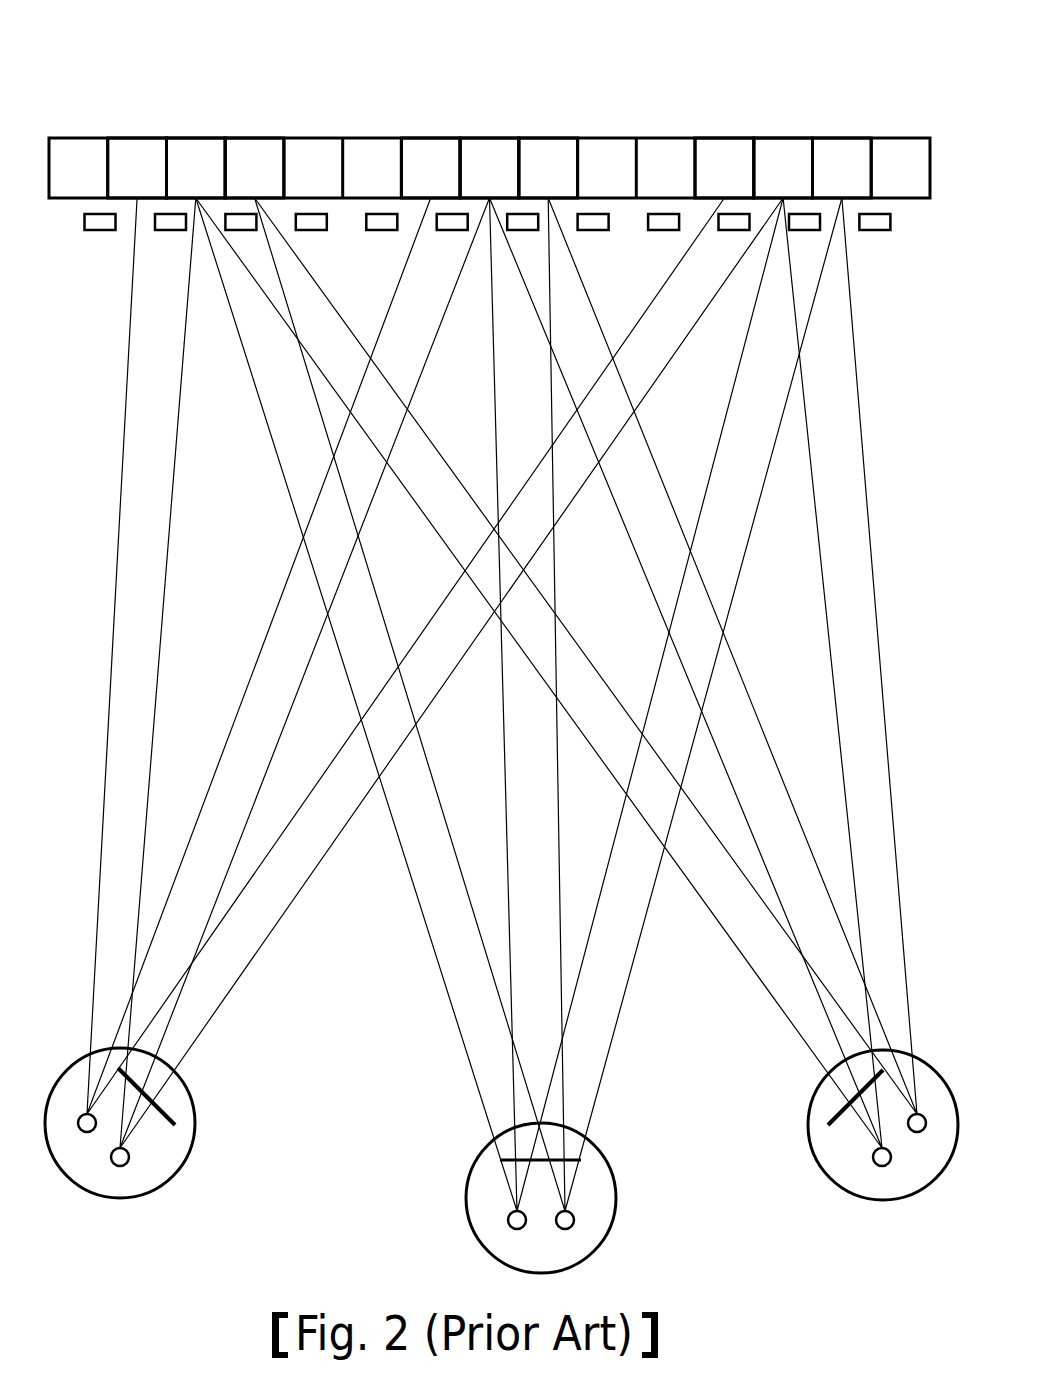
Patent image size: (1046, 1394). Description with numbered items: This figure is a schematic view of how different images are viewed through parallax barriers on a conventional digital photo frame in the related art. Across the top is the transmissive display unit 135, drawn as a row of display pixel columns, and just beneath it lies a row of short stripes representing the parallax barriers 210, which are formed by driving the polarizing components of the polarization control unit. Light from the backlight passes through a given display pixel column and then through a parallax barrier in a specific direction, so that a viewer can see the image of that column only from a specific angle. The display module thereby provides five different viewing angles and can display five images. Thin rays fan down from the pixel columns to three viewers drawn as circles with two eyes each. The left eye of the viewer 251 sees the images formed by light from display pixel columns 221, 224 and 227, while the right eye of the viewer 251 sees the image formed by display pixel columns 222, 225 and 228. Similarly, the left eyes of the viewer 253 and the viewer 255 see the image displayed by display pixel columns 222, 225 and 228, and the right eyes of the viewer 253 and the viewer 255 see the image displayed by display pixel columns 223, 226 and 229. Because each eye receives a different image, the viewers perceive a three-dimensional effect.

The transmissive display unit 135 is at (589, 86).
The parallax barriers 210 is at (100, 230).
The display pixel column 221 is at (137, 137).
The display pixel column 222 is at (196, 137).
The display pixel column 223 is at (255, 137).
The display pixel column 224 is at (431, 137).
The display pixel column 225 is at (489, 137).
The display pixel column 226 is at (548, 137).
The display pixel column 227 is at (724, 137).
The display pixel column 228 is at (783, 137).
The display pixel column 229 is at (842, 137).
The viewer 251 is at (173, 1181).
The viewer 253 is at (466, 1197).
The viewer 255 is at (887, 1199).